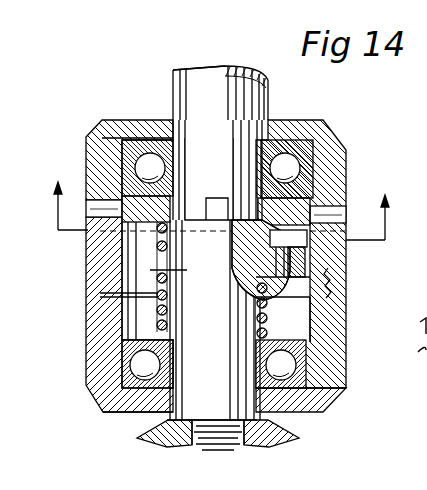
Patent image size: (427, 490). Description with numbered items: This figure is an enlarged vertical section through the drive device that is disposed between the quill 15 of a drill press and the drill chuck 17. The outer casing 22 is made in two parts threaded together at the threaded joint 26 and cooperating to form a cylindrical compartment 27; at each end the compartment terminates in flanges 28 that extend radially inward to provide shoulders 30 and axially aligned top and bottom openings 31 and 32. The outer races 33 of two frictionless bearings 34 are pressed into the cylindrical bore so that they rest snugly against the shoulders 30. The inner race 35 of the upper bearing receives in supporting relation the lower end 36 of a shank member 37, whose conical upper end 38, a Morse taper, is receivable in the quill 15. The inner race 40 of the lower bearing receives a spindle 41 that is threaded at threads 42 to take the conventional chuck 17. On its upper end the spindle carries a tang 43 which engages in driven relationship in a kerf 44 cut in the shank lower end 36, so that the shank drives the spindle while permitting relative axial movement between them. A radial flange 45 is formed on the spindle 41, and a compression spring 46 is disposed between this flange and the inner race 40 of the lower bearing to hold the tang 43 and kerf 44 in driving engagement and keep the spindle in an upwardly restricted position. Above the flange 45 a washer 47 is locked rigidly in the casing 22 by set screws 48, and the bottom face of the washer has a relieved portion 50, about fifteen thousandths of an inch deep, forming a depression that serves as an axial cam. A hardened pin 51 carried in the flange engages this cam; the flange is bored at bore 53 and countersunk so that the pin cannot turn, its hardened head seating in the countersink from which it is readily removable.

The quill 15 is at (224, 200).
The drill chuck 17 is at (145, 437).
The outer casing 22 is at (337, 330).
The threaded joint 26 is at (332, 280).
The cylindrical compartment 27 is at (305, 315).
The flanges 28 is at (290, 128).
The shoulders 30 is at (100, 130).
The top opening 31 is at (170, 118).
The bottom opening 32 is at (172, 416).
The outer races 33 is at (301, 150).
The frictionless bearings 34 is at (300, 170).
The inner race of upper bearing 35 is at (183, 122).
The lower end of shank member 36 is at (197, 166).
The shank member 37 is at (195, 90).
The conical upper end 38 is at (182, 71).
The inner race of lower bearing 40 is at (160, 366).
The spindle 41 is at (217, 381).
The threads 42 is at (193, 443).
The tang 43 is at (220, 190).
The kerf 44 is at (207, 238).
The radial flange 45 is at (187, 275).
The compression spring 46 is at (174, 313).
The washer 47 is at (115, 222).
The set screws 48 is at (325, 215).
The relieved portion 50 is at (236, 256).
The hardened pin 51 is at (346, 241).
The bore 53 is at (283, 310).